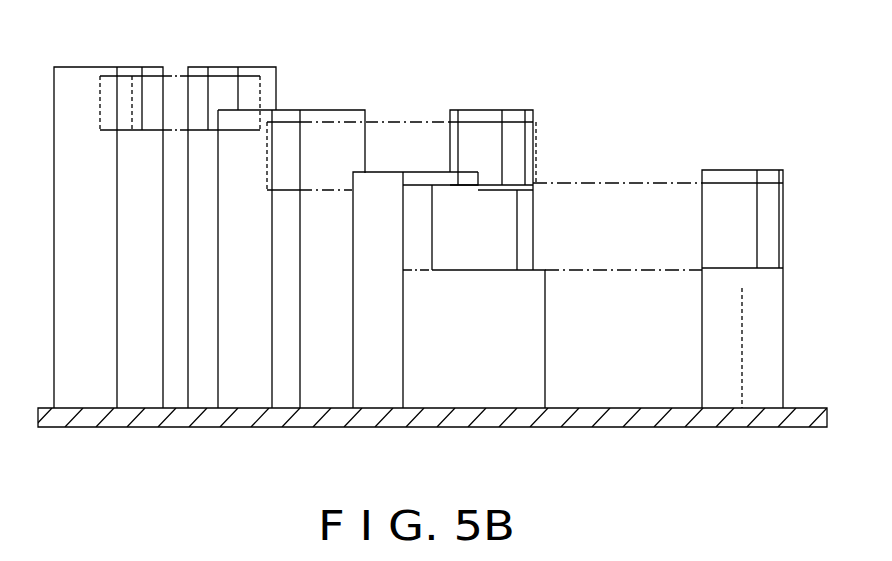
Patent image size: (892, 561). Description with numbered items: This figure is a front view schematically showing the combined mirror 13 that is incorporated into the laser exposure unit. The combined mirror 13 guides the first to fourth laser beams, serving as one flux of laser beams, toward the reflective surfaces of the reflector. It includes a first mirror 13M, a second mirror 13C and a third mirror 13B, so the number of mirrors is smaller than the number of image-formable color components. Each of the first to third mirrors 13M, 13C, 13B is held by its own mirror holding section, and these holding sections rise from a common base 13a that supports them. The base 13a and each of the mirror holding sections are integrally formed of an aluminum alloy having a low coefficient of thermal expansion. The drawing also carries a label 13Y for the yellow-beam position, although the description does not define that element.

The combined mirror 13 is at (649, 98).
The yellow filter layer 13Y is at (78, 77).
The third mirror 13B is at (178, 73).
The second mirror 13C is at (400, 120).
The first mirror 13M is at (650, 182).
The base 13a is at (653, 417).